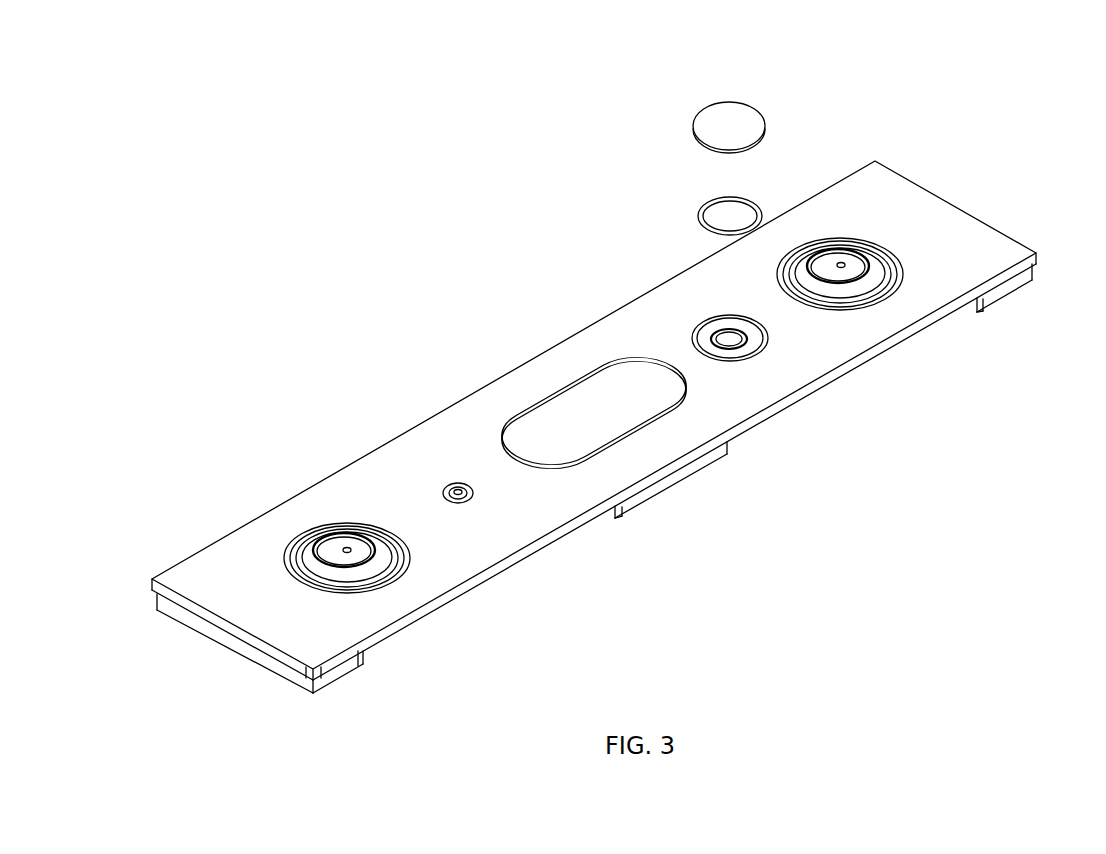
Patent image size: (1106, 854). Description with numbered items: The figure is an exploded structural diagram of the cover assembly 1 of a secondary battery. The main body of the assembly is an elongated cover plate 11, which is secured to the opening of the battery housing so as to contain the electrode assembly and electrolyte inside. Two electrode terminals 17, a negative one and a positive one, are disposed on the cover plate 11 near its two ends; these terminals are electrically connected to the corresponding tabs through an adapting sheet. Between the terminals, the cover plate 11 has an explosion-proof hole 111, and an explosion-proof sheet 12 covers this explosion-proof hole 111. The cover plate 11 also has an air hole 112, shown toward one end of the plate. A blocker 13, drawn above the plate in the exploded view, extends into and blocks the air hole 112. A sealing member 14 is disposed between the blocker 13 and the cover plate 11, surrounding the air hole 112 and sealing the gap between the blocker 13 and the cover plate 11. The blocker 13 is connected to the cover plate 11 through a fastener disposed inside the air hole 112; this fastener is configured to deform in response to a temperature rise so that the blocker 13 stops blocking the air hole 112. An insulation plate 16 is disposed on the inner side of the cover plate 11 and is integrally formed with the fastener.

The cover assembly 1 is at (938, 103).
The cover plate 11 is at (982, 228).
The explosion-proof hole 111 is at (518, 407).
The air hole 112 is at (750, 355).
The explosion-proof sheet 12 is at (561, 405).
The blocker 13 is at (722, 104).
The sealing member 14 is at (703, 211).
The insulation plate 16 is at (656, 500).
The electrode terminal 17 is at (340, 540).